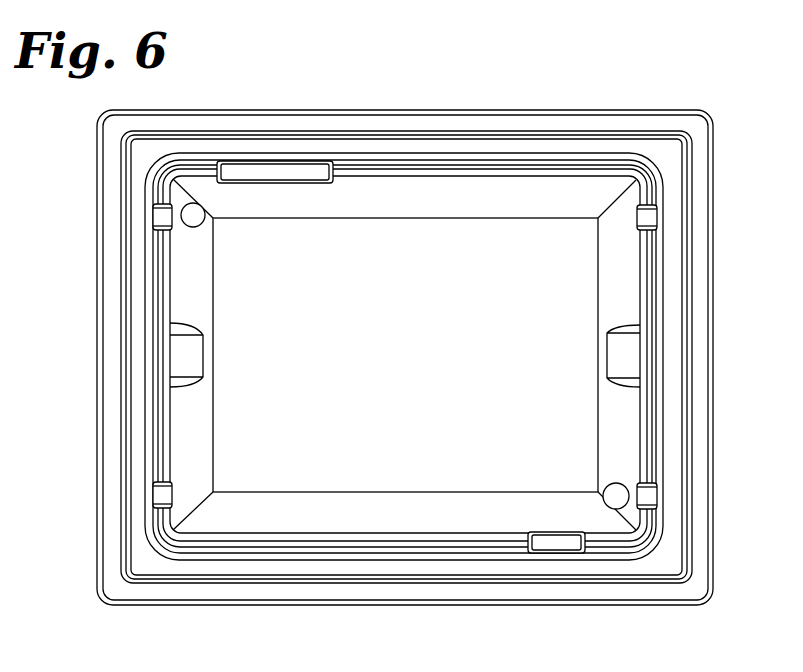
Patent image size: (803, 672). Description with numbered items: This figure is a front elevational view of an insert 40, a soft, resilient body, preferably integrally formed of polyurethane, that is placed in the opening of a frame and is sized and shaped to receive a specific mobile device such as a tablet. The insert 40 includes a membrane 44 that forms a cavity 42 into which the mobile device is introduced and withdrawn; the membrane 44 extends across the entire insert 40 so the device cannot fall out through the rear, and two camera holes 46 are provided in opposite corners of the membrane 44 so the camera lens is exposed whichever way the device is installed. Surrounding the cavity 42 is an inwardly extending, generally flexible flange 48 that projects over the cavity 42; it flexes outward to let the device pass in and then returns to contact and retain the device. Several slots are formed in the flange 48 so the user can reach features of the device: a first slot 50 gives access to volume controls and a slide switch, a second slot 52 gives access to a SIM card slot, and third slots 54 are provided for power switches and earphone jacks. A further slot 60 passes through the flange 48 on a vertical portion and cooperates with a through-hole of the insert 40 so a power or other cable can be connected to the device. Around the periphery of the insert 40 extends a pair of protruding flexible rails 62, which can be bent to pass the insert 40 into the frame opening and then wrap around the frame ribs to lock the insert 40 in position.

The insert 40 is at (401, 324).
The cavity 42 is at (237, 513).
The membrane 44 is at (388, 361).
The camera hole 46 is at (197, 217).
The flange 48 is at (405, 168).
The first slot 50 is at (265, 167).
The second slot 52 is at (555, 542).
The third slot 54 is at (158, 215).
The slot 60 is at (188, 350).
The flexible rail 62 is at (543, 110).